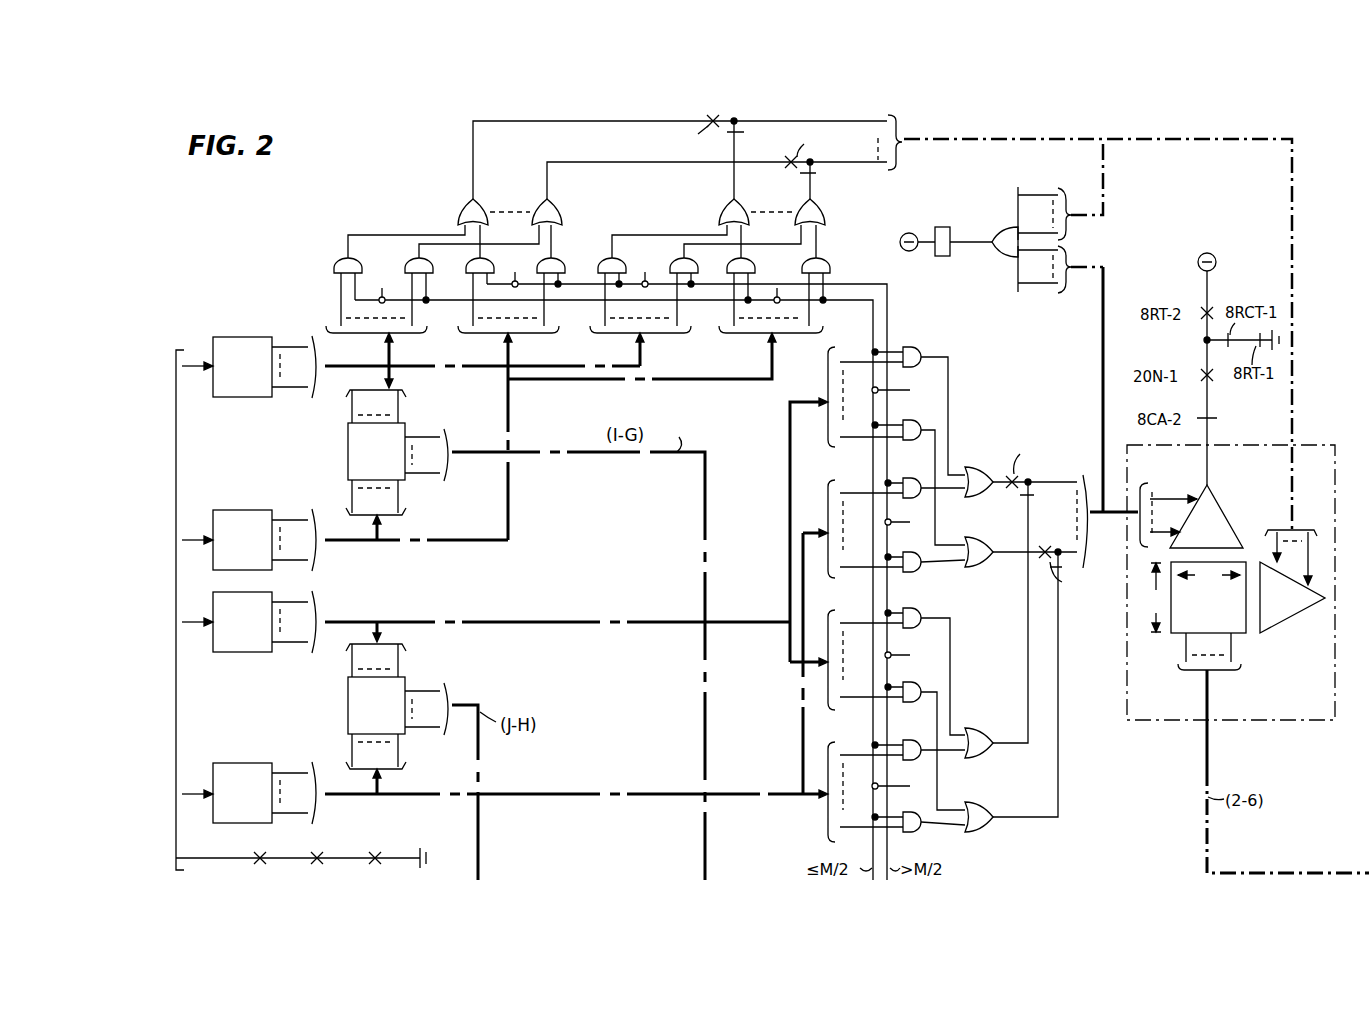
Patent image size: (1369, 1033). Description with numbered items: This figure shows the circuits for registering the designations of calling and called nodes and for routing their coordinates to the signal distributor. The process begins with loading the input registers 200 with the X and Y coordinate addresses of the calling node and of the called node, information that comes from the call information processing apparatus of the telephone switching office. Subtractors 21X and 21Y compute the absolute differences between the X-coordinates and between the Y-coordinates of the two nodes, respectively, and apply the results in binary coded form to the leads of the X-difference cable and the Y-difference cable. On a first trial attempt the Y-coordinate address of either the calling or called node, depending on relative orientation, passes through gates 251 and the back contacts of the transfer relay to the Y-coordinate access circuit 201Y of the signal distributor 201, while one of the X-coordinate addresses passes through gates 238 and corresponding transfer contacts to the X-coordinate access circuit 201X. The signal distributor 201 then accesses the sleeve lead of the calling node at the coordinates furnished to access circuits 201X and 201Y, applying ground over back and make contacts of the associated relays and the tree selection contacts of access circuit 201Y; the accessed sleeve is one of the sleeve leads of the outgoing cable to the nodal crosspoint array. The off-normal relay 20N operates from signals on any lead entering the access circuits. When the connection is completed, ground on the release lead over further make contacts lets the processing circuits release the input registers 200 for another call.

The input registers 200 is at (262, 312).
The gates 238 is at (662, 214).
The gates 251 is at (996, 607).
The signal distributor 201 is at (1178, 722).
The Y-coordinate access circuit 201Y is at (1221, 498).
The X-coordinate access circuit 201X is at (1280, 627).
The subtractor 21X is at (348, 454).
The subtractor 21Y is at (348, 708).
The off-normal relay 20N is at (1001, 216).